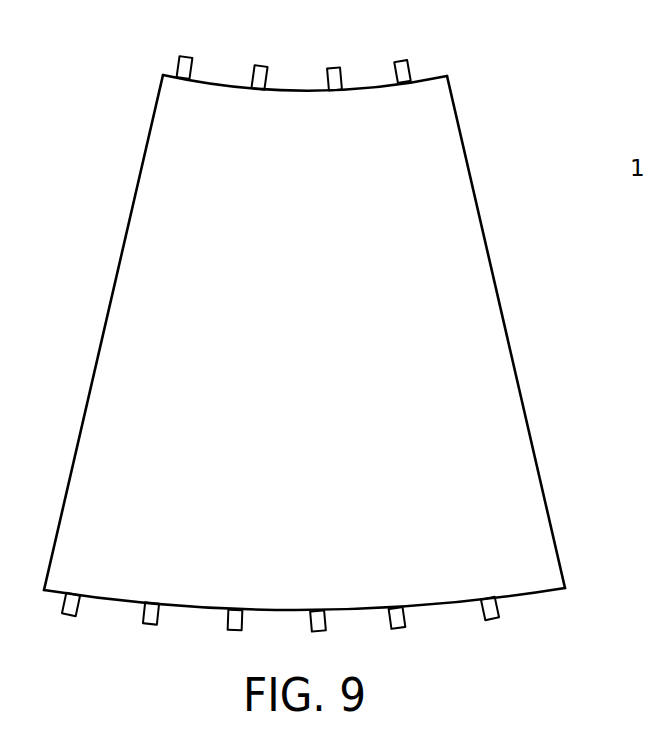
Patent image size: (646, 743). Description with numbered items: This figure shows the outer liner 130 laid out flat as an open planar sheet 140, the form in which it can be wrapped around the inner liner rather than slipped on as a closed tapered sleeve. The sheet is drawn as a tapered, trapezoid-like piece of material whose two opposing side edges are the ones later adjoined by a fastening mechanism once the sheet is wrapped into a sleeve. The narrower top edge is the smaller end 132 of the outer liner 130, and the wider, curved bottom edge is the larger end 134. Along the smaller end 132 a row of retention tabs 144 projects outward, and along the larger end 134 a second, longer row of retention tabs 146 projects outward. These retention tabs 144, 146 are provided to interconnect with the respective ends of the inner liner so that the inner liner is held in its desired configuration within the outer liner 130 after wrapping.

The outer liner 130 is at (340, 363).
The smaller end of the outer liner 132 is at (165, 75).
The larger end of the outer liner 134 is at (105, 598).
The open planar sheet 140 is at (462, 240).
The retention tabs 144 is at (410, 72).
The retention tabs 146 is at (500, 615).